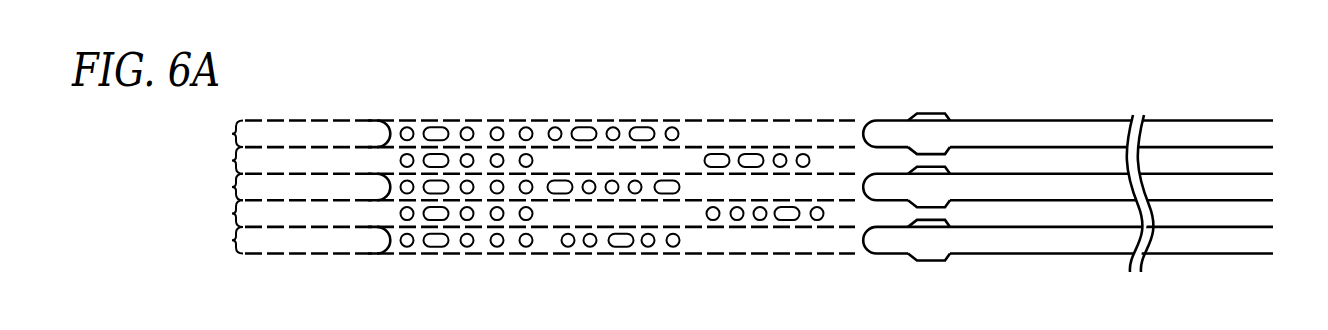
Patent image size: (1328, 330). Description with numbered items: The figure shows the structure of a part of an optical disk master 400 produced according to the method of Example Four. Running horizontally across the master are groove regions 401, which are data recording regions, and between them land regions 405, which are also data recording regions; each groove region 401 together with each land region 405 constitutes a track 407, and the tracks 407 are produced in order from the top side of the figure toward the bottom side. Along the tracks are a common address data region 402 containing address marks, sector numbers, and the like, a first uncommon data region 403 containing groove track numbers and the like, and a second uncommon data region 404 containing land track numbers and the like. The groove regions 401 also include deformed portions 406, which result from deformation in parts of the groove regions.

The optical disk master 400 is at (921, 284).
The groove regions 401 is at (343, 128).
The common address data region 402 is at (543, 111).
The first uncommon data region 403 is at (687, 111).
The second uncommon data region 404 is at (833, 111).
The land regions 405 is at (1017, 163).
The deformed portions 406 is at (935, 128).
The track 407 is at (214, 189).